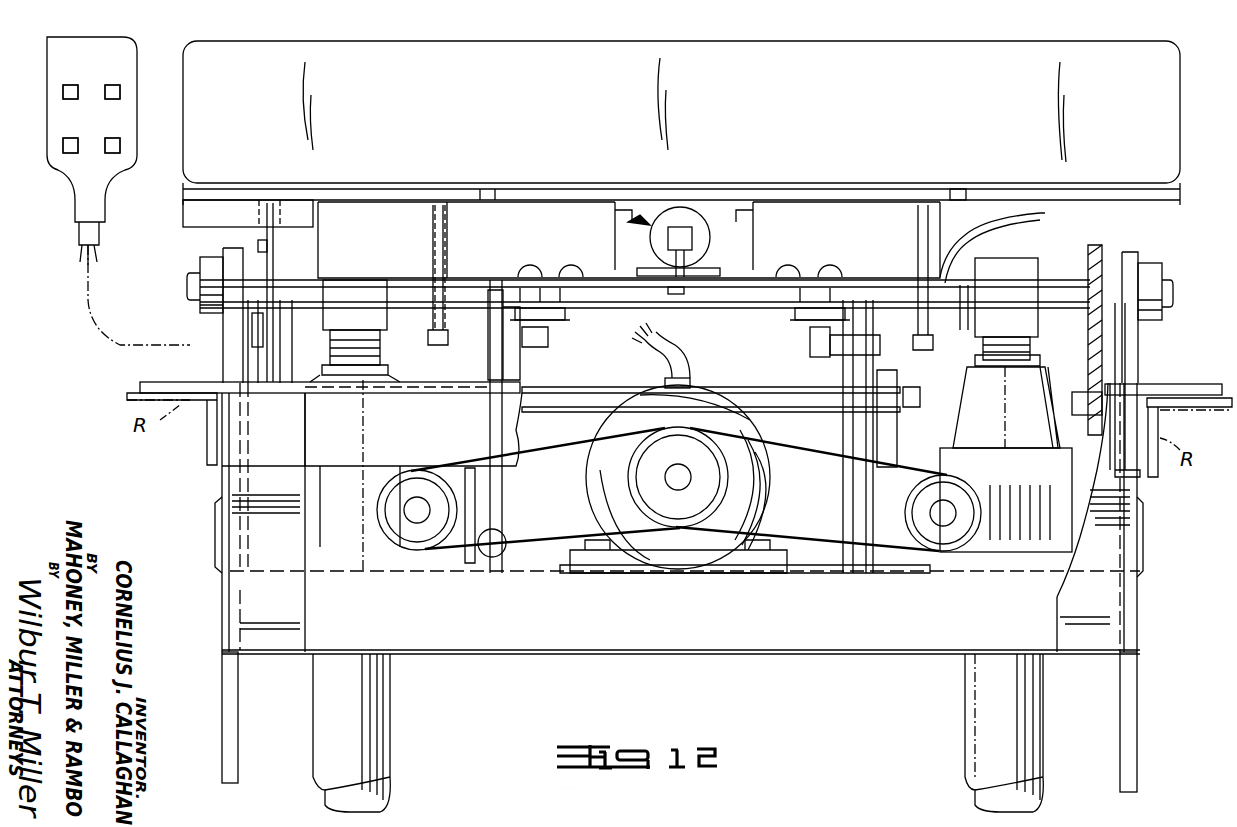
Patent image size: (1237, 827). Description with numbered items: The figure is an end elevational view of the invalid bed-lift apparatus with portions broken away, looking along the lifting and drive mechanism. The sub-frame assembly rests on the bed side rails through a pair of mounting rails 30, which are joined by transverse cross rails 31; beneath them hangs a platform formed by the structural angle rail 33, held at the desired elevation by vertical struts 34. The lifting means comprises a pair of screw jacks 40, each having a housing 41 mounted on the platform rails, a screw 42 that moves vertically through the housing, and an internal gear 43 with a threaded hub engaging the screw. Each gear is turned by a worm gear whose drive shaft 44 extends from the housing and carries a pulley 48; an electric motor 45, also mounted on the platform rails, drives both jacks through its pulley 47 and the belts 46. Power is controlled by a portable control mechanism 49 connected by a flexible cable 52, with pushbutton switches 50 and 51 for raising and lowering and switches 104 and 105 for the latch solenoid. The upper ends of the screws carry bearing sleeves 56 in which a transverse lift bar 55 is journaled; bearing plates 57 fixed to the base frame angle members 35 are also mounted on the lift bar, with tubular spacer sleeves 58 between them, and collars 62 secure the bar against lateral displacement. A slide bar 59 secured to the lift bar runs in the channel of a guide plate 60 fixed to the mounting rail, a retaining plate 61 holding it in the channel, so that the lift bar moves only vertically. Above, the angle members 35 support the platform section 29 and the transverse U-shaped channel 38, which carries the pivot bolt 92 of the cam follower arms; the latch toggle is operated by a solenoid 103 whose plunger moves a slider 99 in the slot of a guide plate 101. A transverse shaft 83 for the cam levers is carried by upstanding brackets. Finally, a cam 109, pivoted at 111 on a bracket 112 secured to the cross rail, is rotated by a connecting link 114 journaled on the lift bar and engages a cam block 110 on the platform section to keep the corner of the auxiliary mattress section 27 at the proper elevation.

The auxiliary mattress section 27 is at (1003, 41).
The platform section 29 is at (990, 197).
The U-shaped channel 38 is at (1045, 218).
The cam block 110 is at (183, 213).
The connecting link 114 is at (262, 215).
The cam 109 is at (268, 243).
The structural angle members 35 is at (448, 228).
The solenoid 103 is at (708, 237).
The slider 99 is at (724, 263).
The guide plate 101 is at (655, 270).
The bolt 92 is at (830, 265).
The collars 62 is at (1148, 262).
The lift bar 55 is at (1172, 292).
The guide plate 60 is at (1135, 348).
The slide bar 59 is at (1138, 692).
The pivot 111 is at (265, 330).
The bearing sleeve 56 is at (1022, 262).
The tubular spacer sleeves 58 is at (968, 275).
The screw 42 is at (1030, 343).
The bearing plate 57 is at (920, 292).
The bracket 112 is at (288, 367).
The cross rails 31 is at (1178, 388).
The mounting rails 30 is at (1175, 402).
The platform rail 33 is at (835, 642).
The struts 34 is at (1052, 652).
The retaining plate 61 is at (1143, 530).
The gear 43 is at (1040, 545).
The housing 41 is at (1023, 435).
The screw jacks 40 is at (962, 710).
The shaft 83 is at (792, 395).
The pulleys 48 is at (905, 505).
The electric motor 45 is at (768, 478).
The pulley 47 is at (630, 488).
The drive shaft 44 is at (944, 513).
The belts 46 is at (797, 520).
The flexible cable 52 is at (120, 238).
The control mechanism 49 is at (136, 90).
The pushbutton switch 50 is at (63, 88).
The pushbutton switch 51 is at (120, 92).
The pushbutton switch 105 is at (120, 140).
The pushbutton switch 104 is at (65, 148).